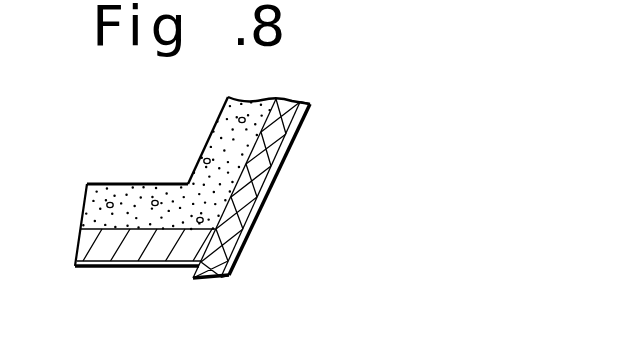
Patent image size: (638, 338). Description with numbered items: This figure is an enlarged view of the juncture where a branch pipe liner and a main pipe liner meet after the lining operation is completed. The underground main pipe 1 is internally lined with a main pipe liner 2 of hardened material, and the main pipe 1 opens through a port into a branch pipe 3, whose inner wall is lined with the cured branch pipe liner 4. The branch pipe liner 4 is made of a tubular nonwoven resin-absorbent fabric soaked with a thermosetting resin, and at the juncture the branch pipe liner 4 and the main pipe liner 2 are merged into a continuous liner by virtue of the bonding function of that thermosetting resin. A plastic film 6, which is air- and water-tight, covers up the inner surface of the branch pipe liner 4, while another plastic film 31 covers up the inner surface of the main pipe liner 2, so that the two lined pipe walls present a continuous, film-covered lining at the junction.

The underground main pipe 1 is at (95, 193).
The main pipe liner 2 is at (100, 250).
The branch pipe 3 is at (229, 128).
The branch pipe liner 4 is at (277, 133).
The plastic film 6 is at (262, 205).
The plastic film 31 is at (131, 268).